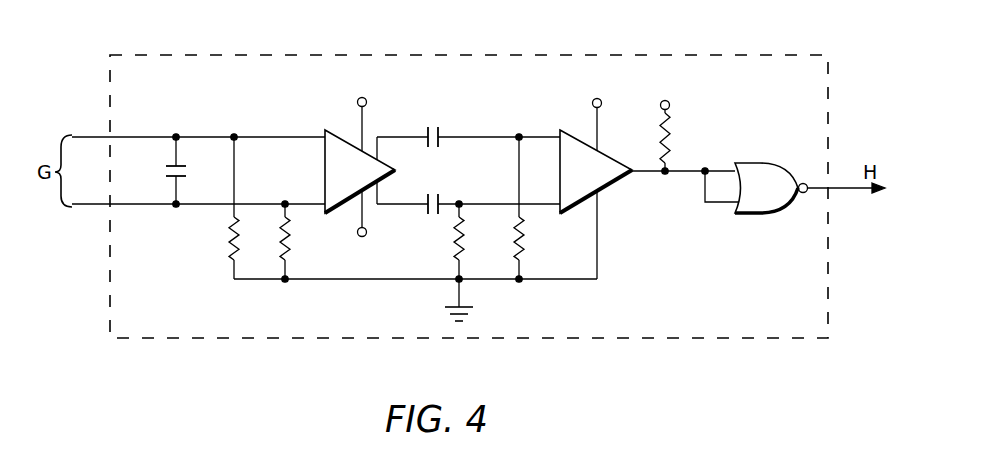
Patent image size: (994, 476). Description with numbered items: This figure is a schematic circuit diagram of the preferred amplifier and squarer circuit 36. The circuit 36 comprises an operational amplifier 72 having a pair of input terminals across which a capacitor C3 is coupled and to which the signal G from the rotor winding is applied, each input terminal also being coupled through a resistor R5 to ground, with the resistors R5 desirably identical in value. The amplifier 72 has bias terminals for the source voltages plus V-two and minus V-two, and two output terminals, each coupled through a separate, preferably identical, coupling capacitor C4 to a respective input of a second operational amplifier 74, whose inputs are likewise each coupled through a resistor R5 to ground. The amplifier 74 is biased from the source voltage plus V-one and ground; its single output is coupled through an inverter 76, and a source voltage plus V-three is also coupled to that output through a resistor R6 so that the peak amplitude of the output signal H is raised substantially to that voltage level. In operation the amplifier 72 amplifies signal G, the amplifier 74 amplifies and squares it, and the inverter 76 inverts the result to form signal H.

The amplifier and squarer circuit 36 is at (494, 55).
The operational amplifier 72 is at (332, 158).
The second operational amplifier 74 is at (578, 203).
The inverter 76 is at (765, 212).
The capacitor C3 is at (191, 170).
The coupling capacitor C4 is at (468, 158).
The resistor R5 is at (362, 208).
The pull-up resistor R6 is at (672, 123).